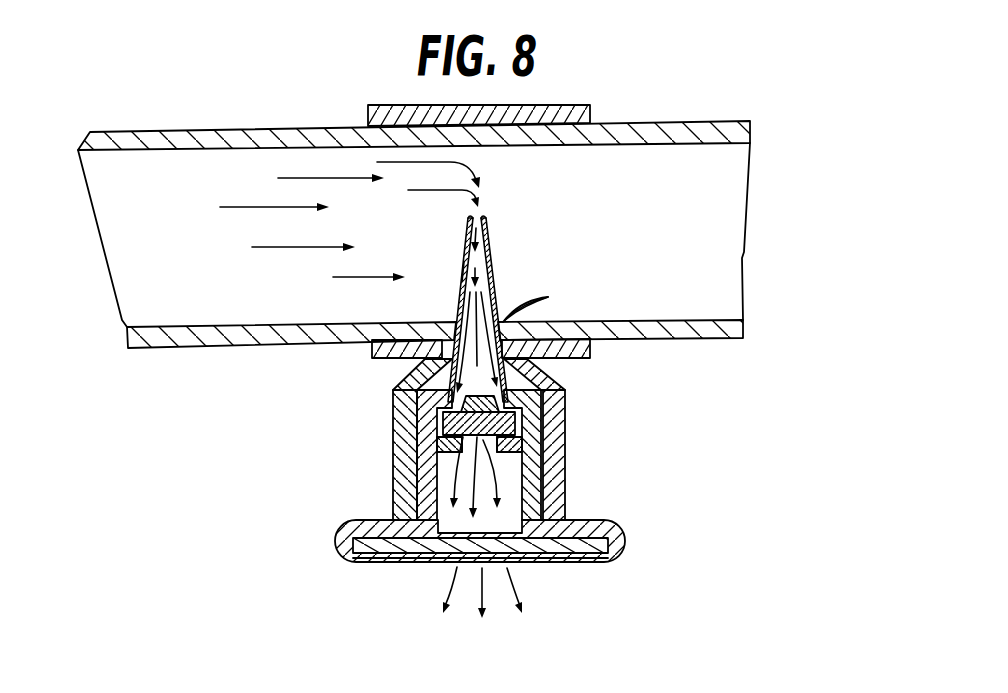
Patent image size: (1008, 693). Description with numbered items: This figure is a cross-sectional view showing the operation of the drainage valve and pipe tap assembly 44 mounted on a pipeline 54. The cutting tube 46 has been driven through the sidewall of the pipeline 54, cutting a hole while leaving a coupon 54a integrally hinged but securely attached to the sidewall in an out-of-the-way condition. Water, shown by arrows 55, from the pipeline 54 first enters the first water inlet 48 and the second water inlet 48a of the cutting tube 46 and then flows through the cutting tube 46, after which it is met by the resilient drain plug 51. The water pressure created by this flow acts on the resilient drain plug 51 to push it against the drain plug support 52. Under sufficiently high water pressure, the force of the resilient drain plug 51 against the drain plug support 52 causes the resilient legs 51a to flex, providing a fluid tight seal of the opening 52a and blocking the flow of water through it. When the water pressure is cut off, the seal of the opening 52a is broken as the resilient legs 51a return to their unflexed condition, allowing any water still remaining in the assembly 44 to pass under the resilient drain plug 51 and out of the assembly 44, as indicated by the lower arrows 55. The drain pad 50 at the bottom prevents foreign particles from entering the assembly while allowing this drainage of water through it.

The drainage valve and pipe tap assembly 44 is at (668, 410).
The cutting tube 46 is at (493, 252).
The first inlet 48 is at (484, 218).
The second inlet 48a is at (462, 272).
The drain pad 50 is at (333, 542).
The resilient drain plug 51 is at (443, 420).
The resilient legs 51a is at (520, 427).
The drain plug support 52 is at (447, 443).
The opening 52a is at (478, 447).
The pipeline 54 is at (655, 122).
The coupon 54a is at (541, 298).
The arrows 55 is at (240, 207).